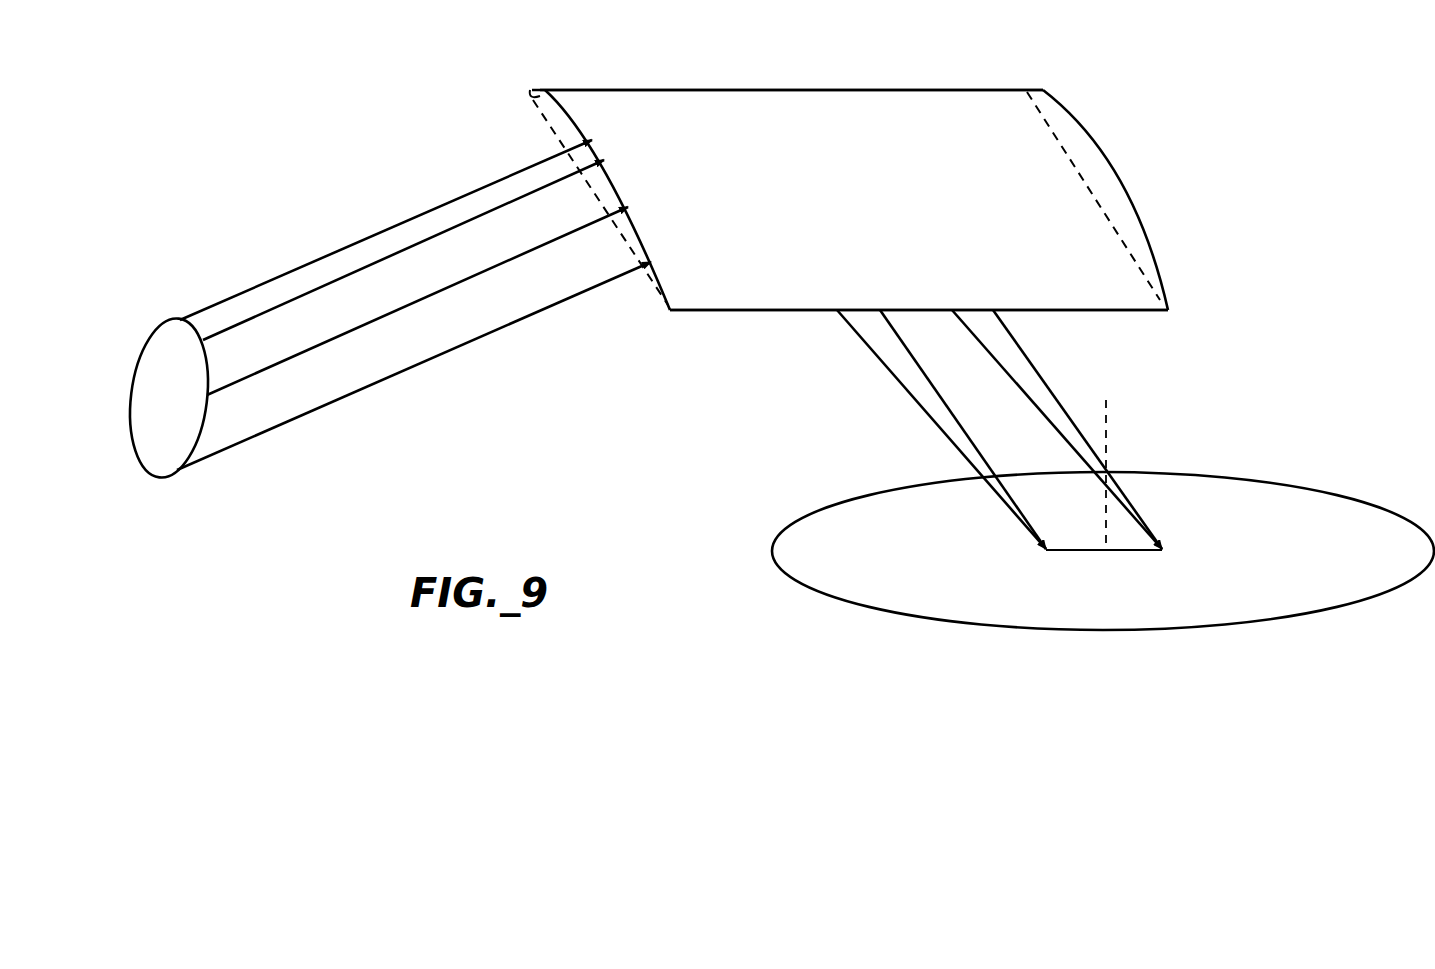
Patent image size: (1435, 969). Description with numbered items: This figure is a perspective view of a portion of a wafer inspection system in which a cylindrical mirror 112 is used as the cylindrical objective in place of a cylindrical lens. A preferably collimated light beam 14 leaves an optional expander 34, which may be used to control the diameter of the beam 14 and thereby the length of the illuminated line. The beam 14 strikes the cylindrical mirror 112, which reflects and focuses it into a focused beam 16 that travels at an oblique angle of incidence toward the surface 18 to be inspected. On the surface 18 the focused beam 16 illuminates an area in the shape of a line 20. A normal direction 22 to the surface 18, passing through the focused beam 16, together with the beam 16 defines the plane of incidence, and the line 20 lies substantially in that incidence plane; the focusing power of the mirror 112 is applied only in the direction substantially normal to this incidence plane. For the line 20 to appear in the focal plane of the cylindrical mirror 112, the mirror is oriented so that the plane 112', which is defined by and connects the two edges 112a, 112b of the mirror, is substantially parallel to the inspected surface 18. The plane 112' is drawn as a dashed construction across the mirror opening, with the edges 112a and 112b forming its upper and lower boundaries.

The expander 34 is at (146, 352).
The collimated light beam 14 is at (466, 345).
The cylindrical mirror 112 is at (863, 200).
The edge of the mirror 112a is at (903, 90).
The edge of the mirror 112b is at (1082, 312).
The plane connecting the mirror edges 112' is at (560, 202).
The focused beam 16 is at (888, 372).
The surface to be inspected 18 is at (1337, 506).
The line 20 is at (1108, 552).
The normal direction to surface 22 is at (1108, 400).